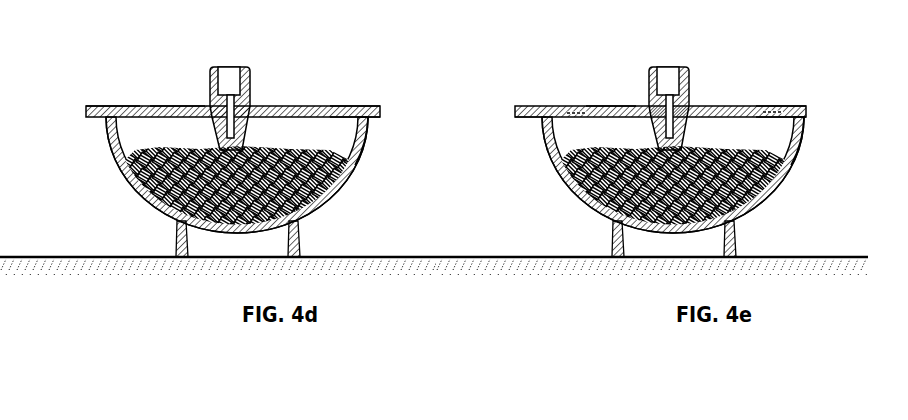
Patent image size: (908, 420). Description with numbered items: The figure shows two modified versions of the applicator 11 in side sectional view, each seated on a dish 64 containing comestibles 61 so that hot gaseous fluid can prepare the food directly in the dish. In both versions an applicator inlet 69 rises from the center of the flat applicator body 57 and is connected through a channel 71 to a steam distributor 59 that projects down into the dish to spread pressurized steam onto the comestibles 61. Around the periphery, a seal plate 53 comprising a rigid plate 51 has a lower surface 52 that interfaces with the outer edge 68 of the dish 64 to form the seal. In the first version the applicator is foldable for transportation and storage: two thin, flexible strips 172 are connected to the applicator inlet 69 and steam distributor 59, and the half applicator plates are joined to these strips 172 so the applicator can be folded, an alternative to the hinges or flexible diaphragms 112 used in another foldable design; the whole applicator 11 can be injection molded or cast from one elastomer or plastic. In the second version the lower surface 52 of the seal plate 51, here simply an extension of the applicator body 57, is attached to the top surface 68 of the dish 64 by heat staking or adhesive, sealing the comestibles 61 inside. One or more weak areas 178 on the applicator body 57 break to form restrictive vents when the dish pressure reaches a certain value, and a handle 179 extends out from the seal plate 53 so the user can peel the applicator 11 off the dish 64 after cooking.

In FIG. 4d, the applicator 11 is at (310, 70).
In FIG. 4e, the applicator 11 is at (686, 144).
In FIG. 4d, the rigid plate 51 is at (381, 108).
In FIG. 4e, the rigid plate 51 is at (687, 99).
In FIG. 4d, the lower surface 52 is at (371, 116).
In FIG. 4e, the lower surface 52 is at (808, 128).
In FIG. 4d, the seal plate 53 is at (364, 93).
In FIG. 4e, the seal plate 53 is at (781, 80).
In FIG. 4e, the applicator body 57 is at (611, 89).
In FIG. 4d, the steam distributor 59 is at (258, 135).
In FIG. 4e, the steam distributor 59 is at (695, 119).
In FIG. 4d, the comestibles 61 is at (341, 176).
In FIG. 4e, the comestibles 61 is at (684, 175).
In FIG. 4d, the dish 64 is at (318, 206).
In FIG. 4e, the dish 64 is at (673, 184).
In FIG. 4d, the outer edge 68 is at (366, 122).
In FIG. 4e, the outer edge 68 is at (815, 146).
In FIG. 4d, the applicator inlet 69 is at (215, 67).
In FIG. 4e, the applicator inlet 69 is at (665, 91).
In FIG. 4d, the channel 71 is at (233, 80).
In FIG. 4e, the channel 71 is at (688, 63).
In FIG. 4d, the flexible diaphragms 112 is at (178, 95).
In FIG. 4d, the thin flexible strips 172 is at (113, 106).
In FIG. 4e, the weak areas 178 is at (665, 108).
In FIG. 4e, the handle 179 is at (529, 139).